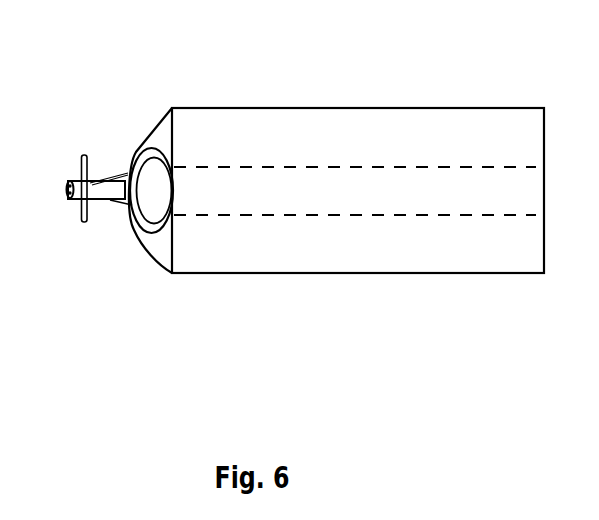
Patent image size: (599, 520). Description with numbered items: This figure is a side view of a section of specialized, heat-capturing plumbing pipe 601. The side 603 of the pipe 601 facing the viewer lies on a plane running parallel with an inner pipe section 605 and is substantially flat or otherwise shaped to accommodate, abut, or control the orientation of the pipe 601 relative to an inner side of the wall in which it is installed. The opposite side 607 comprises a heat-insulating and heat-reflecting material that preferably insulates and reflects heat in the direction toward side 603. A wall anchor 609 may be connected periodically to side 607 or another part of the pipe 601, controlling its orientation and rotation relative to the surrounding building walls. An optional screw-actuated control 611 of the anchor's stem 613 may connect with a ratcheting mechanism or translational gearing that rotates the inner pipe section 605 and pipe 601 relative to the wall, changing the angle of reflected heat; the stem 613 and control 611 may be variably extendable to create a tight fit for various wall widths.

The heat-capturing plumbing pipe 601 is at (149, 297).
The side 603 is at (395, 263).
The inner pipe section 605 is at (137, 157).
The side 607 is at (150, 131).
The wall anchor 609 is at (82, 221).
The control 611 is at (69, 180).
The stem 613 is at (115, 192).